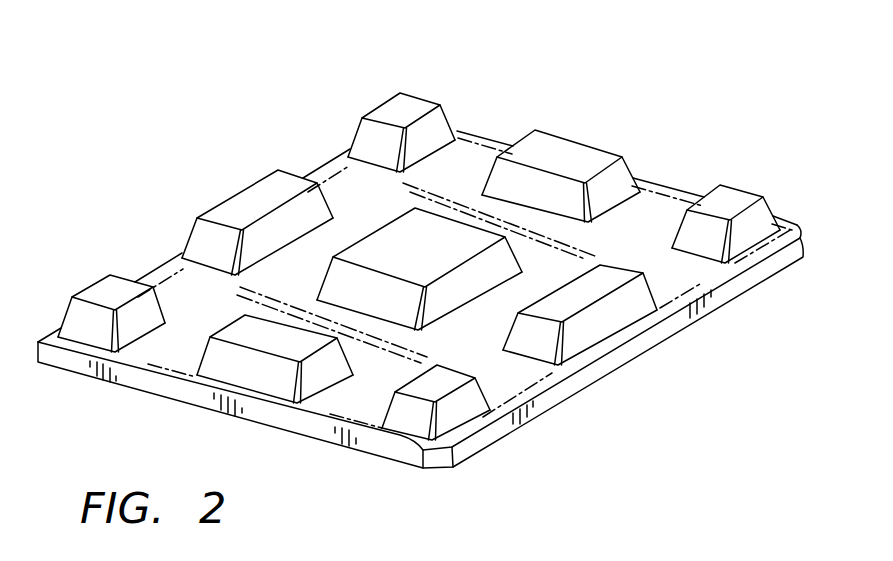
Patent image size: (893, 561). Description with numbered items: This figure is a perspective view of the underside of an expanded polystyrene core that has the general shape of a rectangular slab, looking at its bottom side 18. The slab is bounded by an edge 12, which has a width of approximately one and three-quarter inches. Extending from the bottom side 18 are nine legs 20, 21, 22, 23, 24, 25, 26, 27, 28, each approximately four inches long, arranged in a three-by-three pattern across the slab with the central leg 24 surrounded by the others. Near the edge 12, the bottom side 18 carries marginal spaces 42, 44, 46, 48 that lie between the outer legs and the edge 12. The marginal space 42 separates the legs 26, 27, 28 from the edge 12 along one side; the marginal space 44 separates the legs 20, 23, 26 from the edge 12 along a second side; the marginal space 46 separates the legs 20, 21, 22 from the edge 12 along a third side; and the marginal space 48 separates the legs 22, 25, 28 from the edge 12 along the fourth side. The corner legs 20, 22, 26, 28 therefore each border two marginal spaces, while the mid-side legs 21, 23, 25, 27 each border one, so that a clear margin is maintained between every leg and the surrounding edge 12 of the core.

The edge 12 is at (178, 258).
The bottom side 18 is at (373, 210).
The leg 20 is at (98, 295).
The leg 21 is at (247, 205).
The leg 22 is at (413, 107).
The leg 23 is at (282, 348).
The leg 24 is at (397, 267).
The leg 25 is at (583, 158).
The leg 26 is at (438, 388).
The leg 27 is at (592, 295).
The leg 28 is at (747, 200).
The marginal space 42 is at (566, 384).
The marginal space 44 is at (325, 418).
The marginal space 46 is at (153, 268).
The marginal space 48 is at (505, 143).